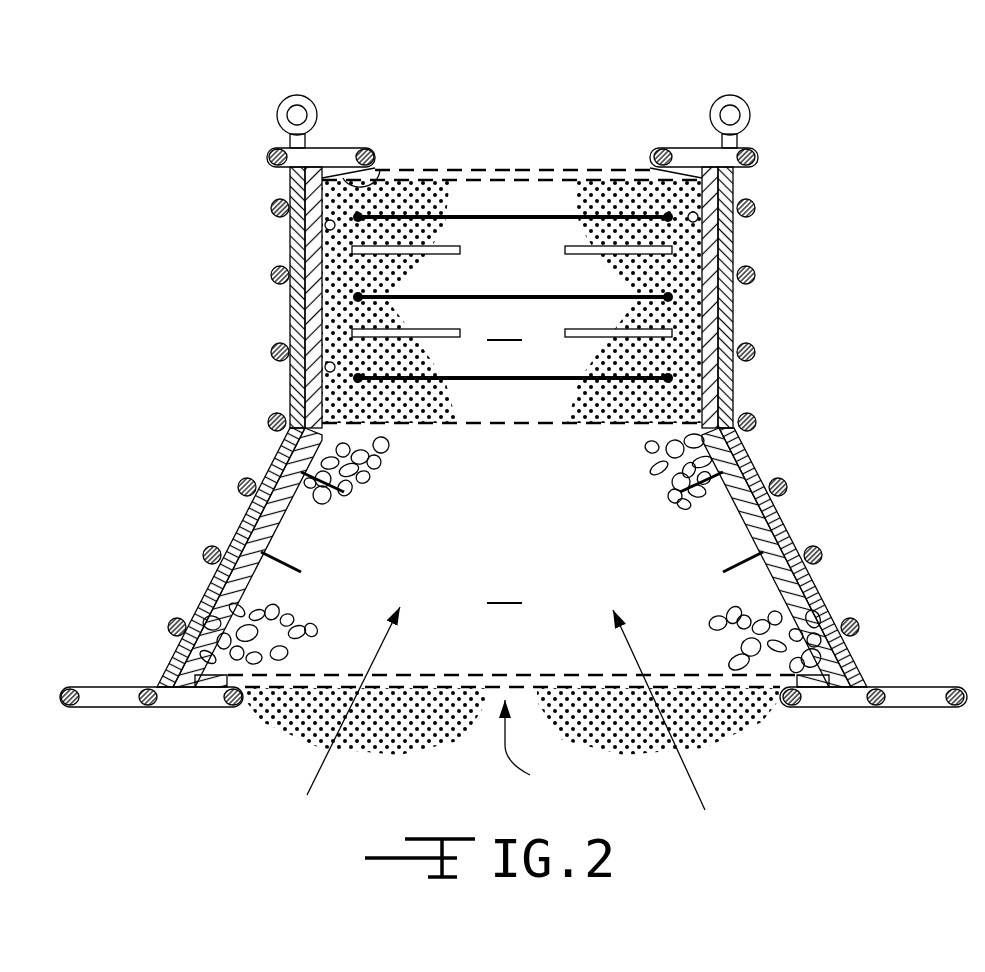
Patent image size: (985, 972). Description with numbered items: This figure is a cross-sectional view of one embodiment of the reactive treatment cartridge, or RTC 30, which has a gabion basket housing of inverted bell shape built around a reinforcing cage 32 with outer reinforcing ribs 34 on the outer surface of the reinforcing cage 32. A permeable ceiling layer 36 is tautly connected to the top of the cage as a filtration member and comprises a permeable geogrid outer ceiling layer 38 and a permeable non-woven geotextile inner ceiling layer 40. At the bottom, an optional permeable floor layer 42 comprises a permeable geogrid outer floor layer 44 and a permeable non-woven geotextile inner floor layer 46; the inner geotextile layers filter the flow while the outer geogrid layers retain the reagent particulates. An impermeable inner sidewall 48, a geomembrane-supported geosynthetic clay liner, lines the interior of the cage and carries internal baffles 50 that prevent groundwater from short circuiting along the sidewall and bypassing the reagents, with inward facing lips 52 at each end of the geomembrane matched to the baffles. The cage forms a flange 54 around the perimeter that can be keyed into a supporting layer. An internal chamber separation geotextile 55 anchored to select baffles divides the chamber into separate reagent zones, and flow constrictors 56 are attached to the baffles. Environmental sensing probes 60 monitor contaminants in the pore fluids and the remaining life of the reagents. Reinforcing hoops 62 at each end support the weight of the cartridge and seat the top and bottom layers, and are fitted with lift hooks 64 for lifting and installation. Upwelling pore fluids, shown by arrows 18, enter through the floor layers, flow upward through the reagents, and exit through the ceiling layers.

The reactive treatment cartridge (RTC) 30 is at (225, 88).
The reinforcing cage 32 is at (723, 308).
The outer reinforcing ribs 34 is at (753, 415).
The permeable ceiling layer 36 is at (560, 165).
The permeable geogrid outer ceiling layer 38 is at (525, 170).
The permeable non-woven geotextile inner ceiling layer 40 is at (480, 180).
The permeable floor layer 42 is at (536, 744).
The permeable geogrid outer floor layer 44 is at (453, 688).
The permeable non-woven geotextile inner floor layer 46 is at (420, 678).
The impermeable inner sidewall 48 is at (343, 210).
The internal baffles 50 is at (723, 475).
The inward facing lips 52 is at (380, 170).
The flange 54 is at (103, 686).
The internal chamber separation non-woven geotextile 55 is at (520, 427).
The flow constrictors 56 is at (440, 255).
The environmental sensing probes 60 is at (325, 226).
The reinforcing hoops 62 is at (322, 150).
The lift hooks 64 is at (732, 118).
The arrows indicating upwelling pore fluids 18 is at (390, 648).